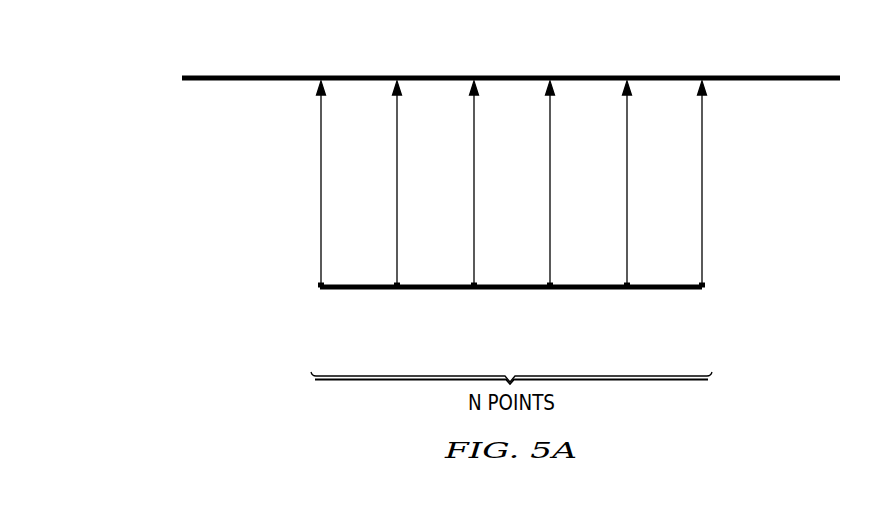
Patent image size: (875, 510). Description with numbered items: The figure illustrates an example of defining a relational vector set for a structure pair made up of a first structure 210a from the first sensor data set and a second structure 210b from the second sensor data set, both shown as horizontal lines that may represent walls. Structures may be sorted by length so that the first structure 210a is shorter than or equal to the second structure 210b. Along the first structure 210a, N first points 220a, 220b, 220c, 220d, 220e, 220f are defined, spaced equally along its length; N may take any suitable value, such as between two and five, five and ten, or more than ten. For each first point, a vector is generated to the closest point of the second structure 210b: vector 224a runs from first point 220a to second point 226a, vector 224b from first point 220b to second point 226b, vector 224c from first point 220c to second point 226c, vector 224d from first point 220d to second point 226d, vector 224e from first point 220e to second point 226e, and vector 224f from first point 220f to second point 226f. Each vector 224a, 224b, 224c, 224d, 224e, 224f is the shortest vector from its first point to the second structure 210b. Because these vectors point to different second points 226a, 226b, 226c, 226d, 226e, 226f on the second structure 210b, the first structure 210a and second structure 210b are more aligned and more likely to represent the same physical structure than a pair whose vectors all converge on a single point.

The first structure 210a is at (511, 290).
The second structure 210b is at (765, 76).
The first point 220a is at (320, 290).
The first point 220b is at (397, 290).
The first point 220c is at (474, 290).
The first point 220d is at (550, 290).
The first point 220e is at (627, 290).
The first point 220f is at (702, 290).
The vector 224a is at (321, 183).
The vector 224b is at (397, 183).
The vector 224c is at (474, 183).
The vector 224d is at (550, 183).
The vector 224e is at (627, 183).
The vector 224f is at (702, 183).
The second point 226a is at (321, 76).
The second point 226b is at (397, 76).
The second point 226c is at (474, 76).
The second point 226d is at (550, 76).
The second point 226e is at (627, 76).
The second point 226f is at (702, 76).